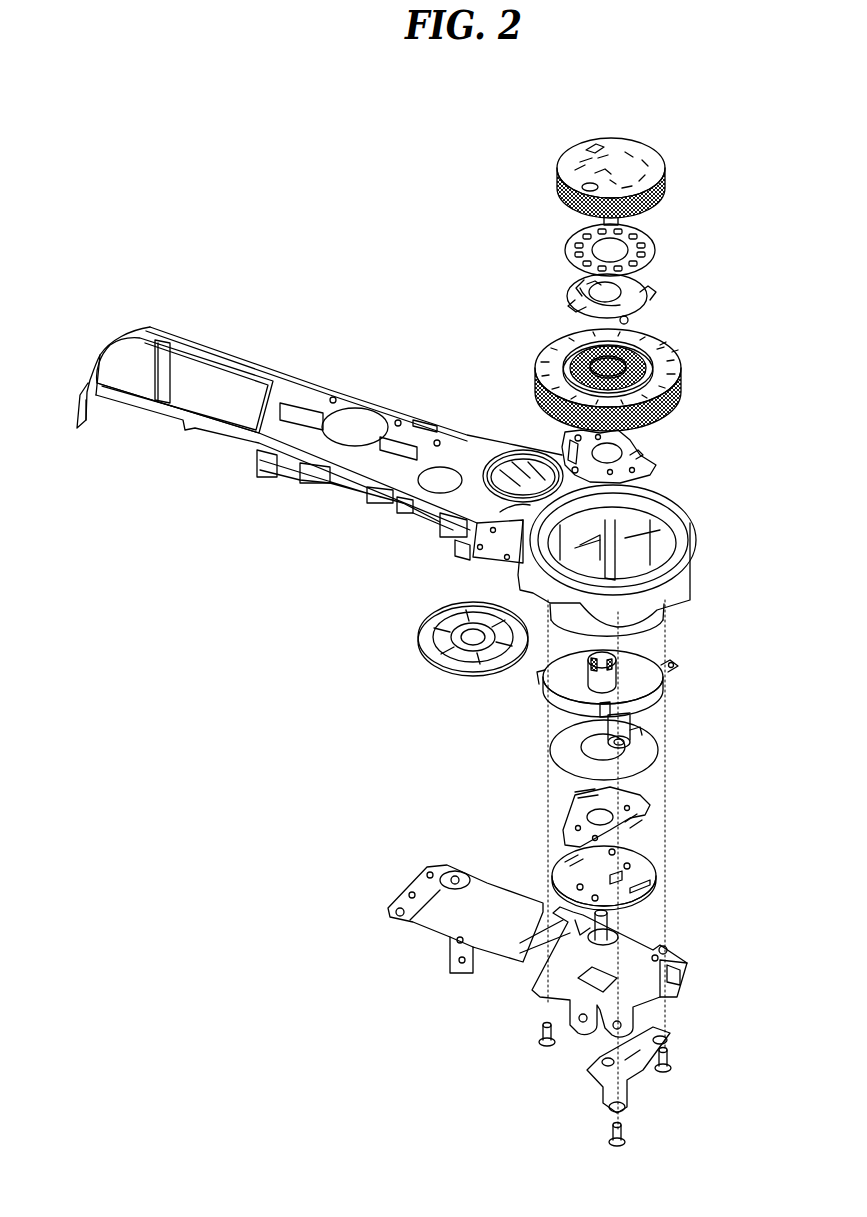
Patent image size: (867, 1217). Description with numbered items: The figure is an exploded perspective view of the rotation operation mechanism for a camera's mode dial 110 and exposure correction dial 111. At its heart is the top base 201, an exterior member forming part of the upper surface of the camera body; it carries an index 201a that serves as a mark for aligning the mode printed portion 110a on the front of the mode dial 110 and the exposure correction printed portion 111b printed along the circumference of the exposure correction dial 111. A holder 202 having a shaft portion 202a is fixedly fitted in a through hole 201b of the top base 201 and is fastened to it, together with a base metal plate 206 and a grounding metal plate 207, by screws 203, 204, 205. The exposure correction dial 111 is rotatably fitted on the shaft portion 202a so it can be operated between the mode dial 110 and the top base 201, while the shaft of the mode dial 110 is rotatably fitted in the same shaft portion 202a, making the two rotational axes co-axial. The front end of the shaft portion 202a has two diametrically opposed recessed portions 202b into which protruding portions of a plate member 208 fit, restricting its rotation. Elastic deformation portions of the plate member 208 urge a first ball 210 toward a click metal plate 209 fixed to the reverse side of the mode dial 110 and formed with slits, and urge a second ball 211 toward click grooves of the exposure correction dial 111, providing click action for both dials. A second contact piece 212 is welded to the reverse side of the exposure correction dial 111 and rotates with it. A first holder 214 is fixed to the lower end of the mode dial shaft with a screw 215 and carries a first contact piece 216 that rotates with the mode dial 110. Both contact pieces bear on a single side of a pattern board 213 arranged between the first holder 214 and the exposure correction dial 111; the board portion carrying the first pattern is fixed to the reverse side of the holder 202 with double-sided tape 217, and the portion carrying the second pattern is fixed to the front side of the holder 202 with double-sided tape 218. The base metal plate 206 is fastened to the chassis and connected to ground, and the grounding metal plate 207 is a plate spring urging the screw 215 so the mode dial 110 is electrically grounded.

The mode dial 110 is at (558, 164).
The mode printed portion 110a is at (593, 145).
The exposure correction dial 111 is at (543, 357).
The exposure correction printed portion 111b is at (675, 360).
The top base 201 is at (326, 392).
The index 201a is at (470, 550).
The through hole 201b is at (630, 555).
The holder 202 is at (560, 687).
The shaft portion 202a is at (612, 678).
The recessed portions 202b is at (613, 650).
The screw 203 is at (537, 1033).
The screw 204 is at (605, 1140).
The screw 205 is at (672, 1060).
The base metal plate 206 is at (410, 882).
The grounding metal plate 207 is at (590, 1075).
The plate member 208 is at (640, 290).
The click metal plate 209 is at (655, 240).
The first ball 210 is at (580, 285).
The second ball 211 is at (630, 320).
The second contact piece 212 is at (660, 457).
The pattern board 213 is at (425, 625).
The first holder 214 is at (640, 868).
The screw 215 is at (615, 915).
The first contact piece 216 is at (640, 800).
The double-sided tape 217 is at (640, 735).
The double-sided tape 218 is at (660, 606).